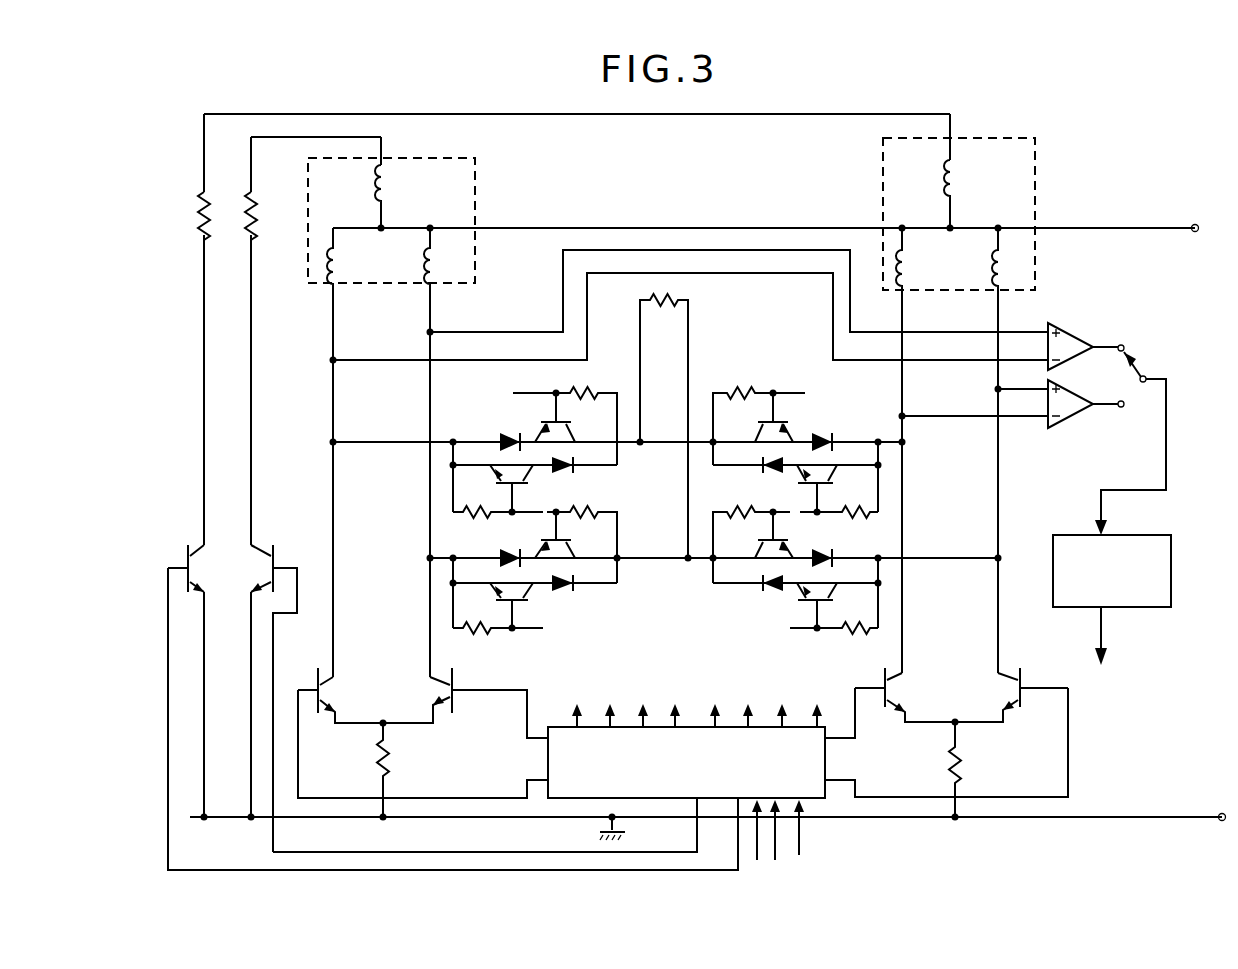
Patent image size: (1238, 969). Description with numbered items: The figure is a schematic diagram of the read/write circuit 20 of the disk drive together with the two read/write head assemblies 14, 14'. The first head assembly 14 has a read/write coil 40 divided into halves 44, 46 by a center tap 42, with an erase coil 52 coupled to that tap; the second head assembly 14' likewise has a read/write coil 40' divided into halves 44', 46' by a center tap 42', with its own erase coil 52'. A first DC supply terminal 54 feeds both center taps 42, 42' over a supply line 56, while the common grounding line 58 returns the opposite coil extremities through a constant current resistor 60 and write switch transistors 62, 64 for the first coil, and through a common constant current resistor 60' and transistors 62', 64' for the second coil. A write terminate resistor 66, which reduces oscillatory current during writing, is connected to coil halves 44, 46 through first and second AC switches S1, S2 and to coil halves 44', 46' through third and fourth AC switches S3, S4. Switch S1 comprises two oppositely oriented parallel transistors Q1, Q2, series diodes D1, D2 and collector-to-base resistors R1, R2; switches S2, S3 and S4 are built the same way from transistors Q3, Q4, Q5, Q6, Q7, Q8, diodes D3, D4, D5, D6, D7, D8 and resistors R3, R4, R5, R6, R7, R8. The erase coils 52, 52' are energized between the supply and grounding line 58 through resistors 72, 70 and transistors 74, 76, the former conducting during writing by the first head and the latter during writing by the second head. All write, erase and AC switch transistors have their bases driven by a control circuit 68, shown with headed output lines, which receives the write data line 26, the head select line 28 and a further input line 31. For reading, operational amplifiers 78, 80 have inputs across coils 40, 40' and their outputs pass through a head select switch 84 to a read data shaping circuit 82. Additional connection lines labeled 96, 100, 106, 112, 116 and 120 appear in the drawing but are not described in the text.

The first read/write head assembly 14 is at (413, 220).
The second read/write head assembly 14' is at (983, 214).
The read/write circuit 20 is at (170, 262).
The write data line 26 is at (755, 860).
The head or side select line 28 is at (778, 858).
The control input line 31 is at (801, 854).
The read/write coil 40 is at (478, 249).
The read/write coil 40' is at (1046, 259).
The center tap 42 is at (408, 197).
The center tap 42' is at (978, 208).
The coil half 44 is at (359, 452).
The coil half 44' is at (924, 450).
The coil half 46 is at (470, 452).
The coil half 46' is at (981, 450).
The erase coil 52 is at (353, 196).
The erase coil 52' is at (976, 193).
The first DC supply terminal 54 is at (1192, 228).
The supply line 56 is at (1104, 228).
The common grounding line 58 is at (490, 815).
The constant current resistor 60 is at (405, 769).
The common constant current resistor 60' is at (986, 768).
The write switch transistor 62 is at (366, 687).
The write switch transistor 62' is at (930, 690).
The write switch transistor 64 is at (489, 703).
The write switch transistor 64' is at (1039, 680).
The write terminate resistor 66 is at (664, 426).
The control circuit 68 is at (827, 765).
The resistor 70 is at (258, 210).
The resistor 72 is at (212, 210).
The transistor 74 is at (201, 559).
The transistor 76 is at (229, 561).
The first operational amplifier 78 is at (1076, 344).
The second operational amplifier 80 is at (1080, 410).
The read data shaping circuit 82 is at (1130, 608).
The head select switch 84 is at (1146, 374).
The base drive line 96 is at (299, 780).
The base drive line 100 is at (527, 689).
The erase control line 106 is at (275, 639).
The base drive line 112 is at (858, 732).
The base drive line 116 is at (1070, 772).
The erase control line 120 is at (168, 660).
The first AC switch S1 is at (490, 417).
The second AC switch S2 is at (595, 623).
The third AC switch S3 is at (760, 378).
The fourth AC switch S4 is at (767, 623).
The resistor R1 is at (590, 393).
The resistor R2 is at (476, 515).
The resistor R3 is at (598, 504).
The resistor R4 is at (491, 632).
The resistor R5 is at (728, 392).
The resistor R6 is at (858, 515).
The resistor R7 is at (736, 511).
The resistor R8 is at (854, 630).
The diode D1 is at (508, 433).
The diode D2 is at (562, 473).
The diode D3 is at (508, 553).
The diode D4 is at (576, 588).
The diode D5 is at (828, 435).
The diode D6 is at (770, 470).
The diode D7 is at (824, 547).
The diode D8 is at (764, 588).
The transistor Q1 is at (567, 431).
The transistor Q2 is at (499, 477).
The transistor Q3 is at (567, 551).
The transistor Q4 is at (498, 595).
The transistor Q5 is at (762, 431).
The transistor Q6 is at (828, 481).
The transistor Q7 is at (764, 549).
The transistor Q8 is at (831, 599).